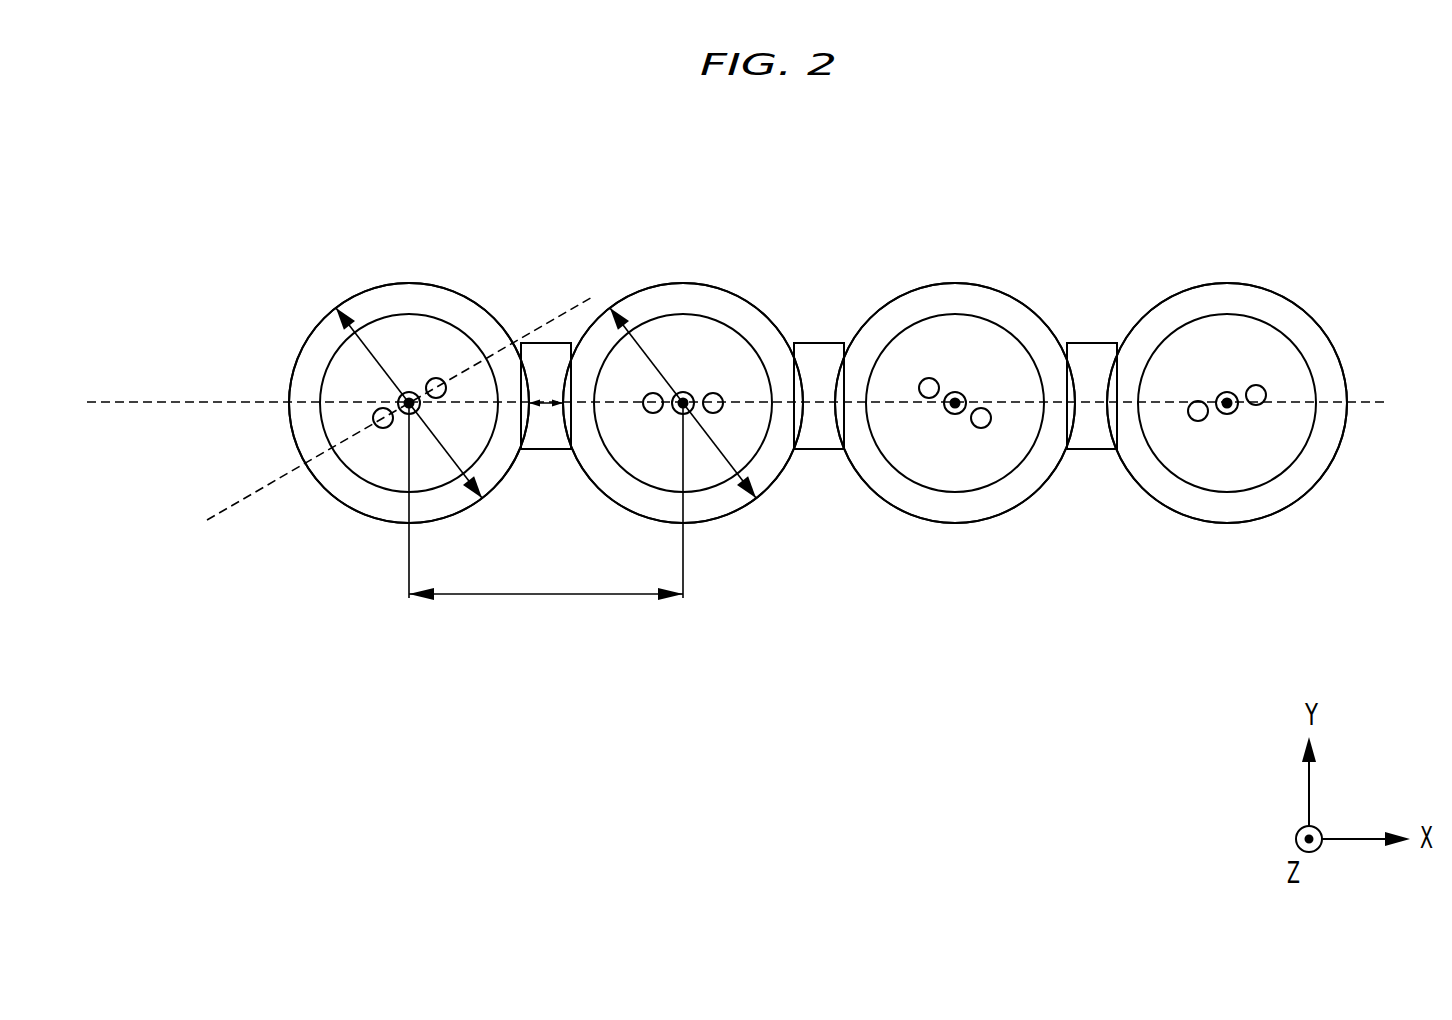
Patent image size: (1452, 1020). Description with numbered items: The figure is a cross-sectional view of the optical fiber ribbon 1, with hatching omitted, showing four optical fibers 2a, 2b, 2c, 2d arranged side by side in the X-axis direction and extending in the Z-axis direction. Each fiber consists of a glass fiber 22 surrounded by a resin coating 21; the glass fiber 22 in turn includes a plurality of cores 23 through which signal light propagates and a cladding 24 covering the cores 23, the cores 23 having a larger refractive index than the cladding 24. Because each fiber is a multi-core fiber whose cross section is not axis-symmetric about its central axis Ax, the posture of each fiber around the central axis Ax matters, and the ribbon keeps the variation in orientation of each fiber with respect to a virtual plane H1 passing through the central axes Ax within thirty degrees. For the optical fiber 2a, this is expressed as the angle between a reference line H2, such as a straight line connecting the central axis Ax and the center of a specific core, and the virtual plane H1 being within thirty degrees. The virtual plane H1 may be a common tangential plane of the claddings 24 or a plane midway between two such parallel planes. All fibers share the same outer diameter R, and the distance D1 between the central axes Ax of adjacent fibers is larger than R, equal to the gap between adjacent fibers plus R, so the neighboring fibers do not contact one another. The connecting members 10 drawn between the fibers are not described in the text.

The optical fiber ribbon 1 is at (287, 187).
The optical fiber 2a is at (395, 283).
The optical fiber 2b is at (687, 283).
The optical fiber 2c is at (950, 283).
The optical fiber 2d is at (1228, 283).
The link / connecting member 10 is at (545, 343).
The resin coating 21 is at (456, 303).
The glass fiber 22 is at (357, 468).
The cores 23 is at (373, 415).
The cladding 24 is at (335, 365).
The central axis Ax is at (413, 413).
The outer diameter R is at (372, 368).
The virtual plane H1 is at (174, 401).
The reference line H2 is at (237, 502).
The distance between central axes D1 is at (546, 501).